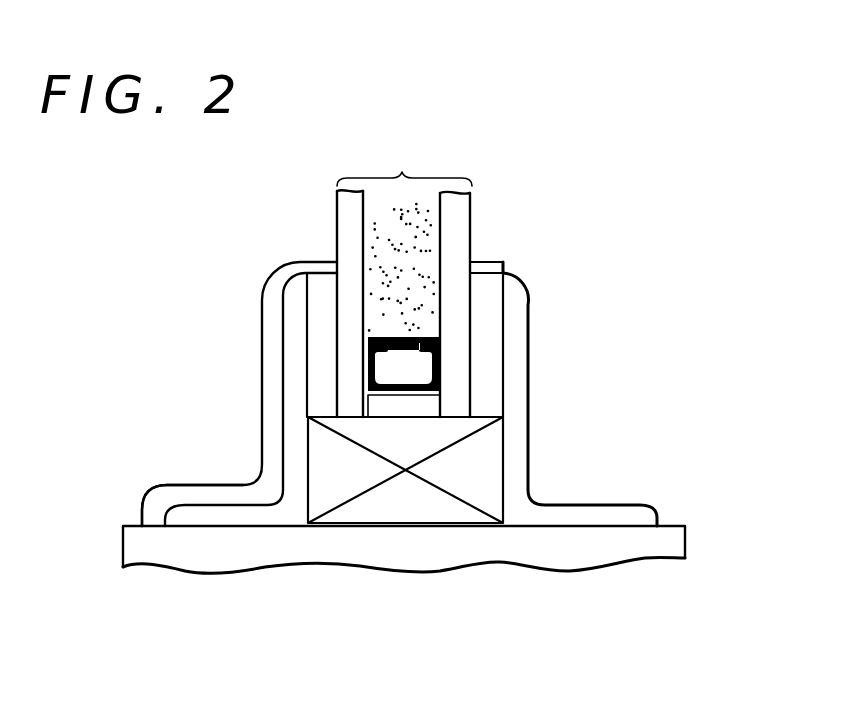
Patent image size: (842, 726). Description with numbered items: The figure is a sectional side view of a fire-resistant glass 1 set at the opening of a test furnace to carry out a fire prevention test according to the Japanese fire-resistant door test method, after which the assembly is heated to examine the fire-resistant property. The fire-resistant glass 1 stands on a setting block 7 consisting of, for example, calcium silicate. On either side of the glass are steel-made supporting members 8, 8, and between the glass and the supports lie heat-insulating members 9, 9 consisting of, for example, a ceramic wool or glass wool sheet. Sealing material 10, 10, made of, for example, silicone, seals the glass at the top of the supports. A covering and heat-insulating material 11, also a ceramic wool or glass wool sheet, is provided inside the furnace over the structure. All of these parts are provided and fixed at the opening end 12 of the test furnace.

The fire-resistant glass 1 is at (404, 276).
The setting block 7 is at (393, 502).
The supporting member 8 is at (292, 353).
The heat-insulating member 9 is at (322, 310).
The sealing material 10 is at (322, 265).
The covering and heat-insulating material 11 is at (182, 495).
The opening end of the test furnace 12 is at (500, 545).